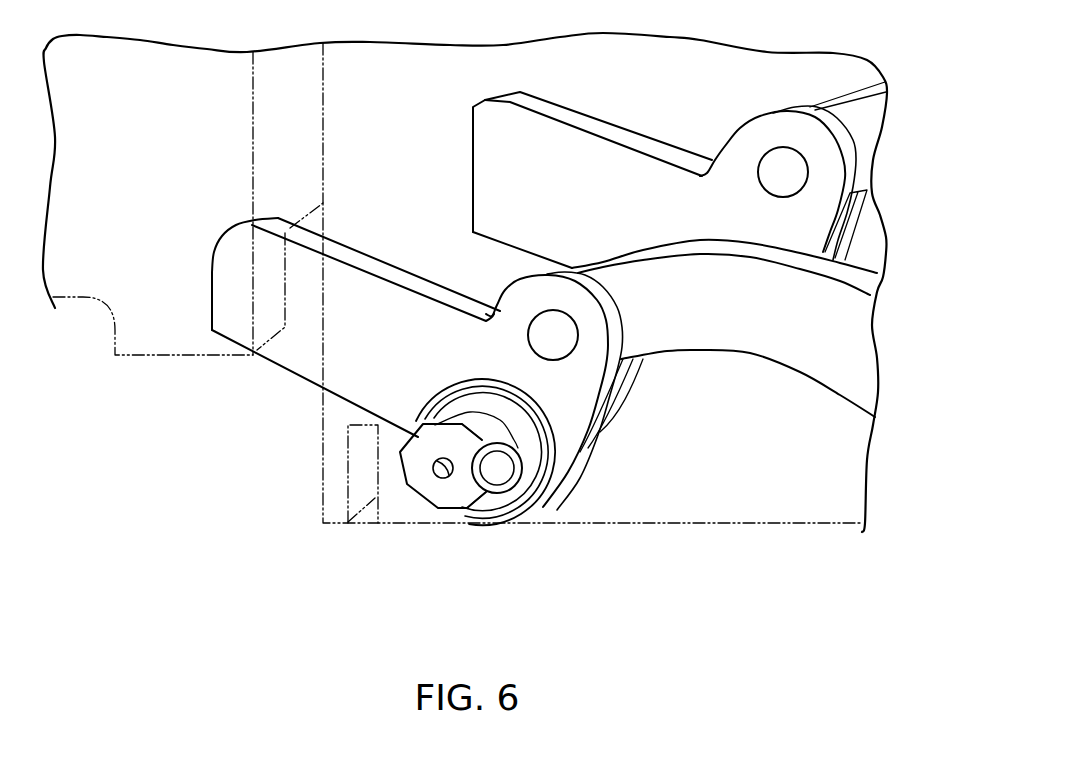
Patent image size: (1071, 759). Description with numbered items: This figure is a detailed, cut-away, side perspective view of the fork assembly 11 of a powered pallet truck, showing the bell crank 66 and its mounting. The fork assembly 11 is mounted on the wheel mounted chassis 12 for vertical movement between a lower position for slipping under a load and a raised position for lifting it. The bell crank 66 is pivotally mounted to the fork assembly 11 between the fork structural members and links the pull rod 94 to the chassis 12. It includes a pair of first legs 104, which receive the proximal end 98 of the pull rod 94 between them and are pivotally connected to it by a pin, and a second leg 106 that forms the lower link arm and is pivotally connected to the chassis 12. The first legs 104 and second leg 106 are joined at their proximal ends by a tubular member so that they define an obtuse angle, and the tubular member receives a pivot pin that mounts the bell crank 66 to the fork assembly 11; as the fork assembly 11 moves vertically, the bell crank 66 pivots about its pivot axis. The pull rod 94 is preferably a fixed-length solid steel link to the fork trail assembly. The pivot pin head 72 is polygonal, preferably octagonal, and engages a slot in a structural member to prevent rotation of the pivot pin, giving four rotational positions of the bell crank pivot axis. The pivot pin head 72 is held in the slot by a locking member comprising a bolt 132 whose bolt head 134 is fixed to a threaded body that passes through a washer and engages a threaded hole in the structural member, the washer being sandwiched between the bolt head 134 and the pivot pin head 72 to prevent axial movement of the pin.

The fork assembly 11 is at (272, 472).
The chassis 12 is at (175, 342).
The bell crank 66 is at (590, 462).
The pivot pin head 72 is at (441, 498).
The pull rod 94 is at (762, 335).
The proximal end of the pull rod 98 is at (640, 302).
The first legs 104 is at (603, 410).
The second leg 106 is at (295, 357).
The bolt 132 is at (508, 490).
The bolt head 134 is at (500, 468).